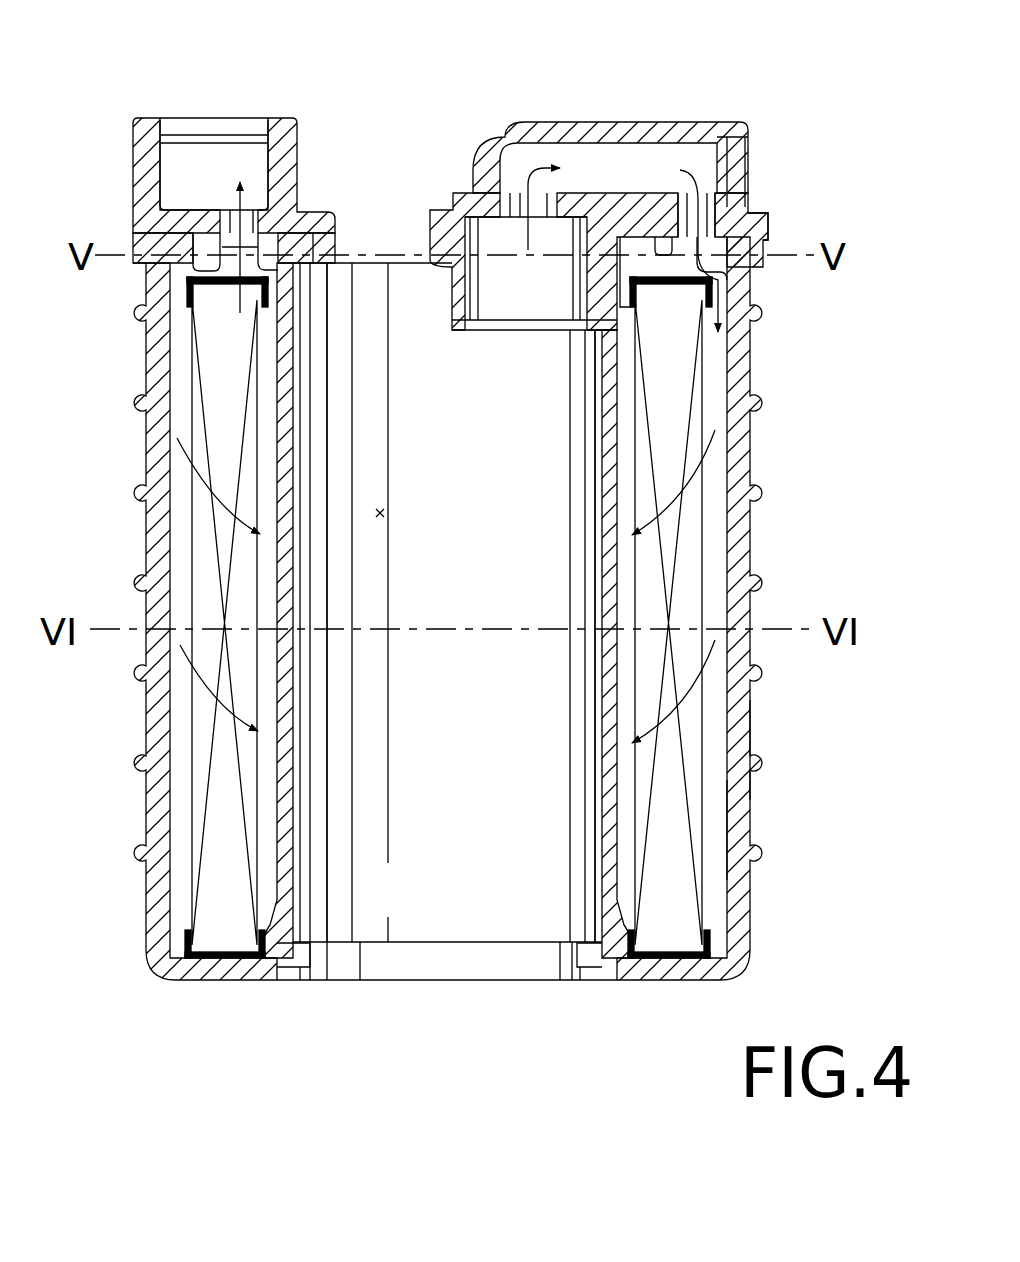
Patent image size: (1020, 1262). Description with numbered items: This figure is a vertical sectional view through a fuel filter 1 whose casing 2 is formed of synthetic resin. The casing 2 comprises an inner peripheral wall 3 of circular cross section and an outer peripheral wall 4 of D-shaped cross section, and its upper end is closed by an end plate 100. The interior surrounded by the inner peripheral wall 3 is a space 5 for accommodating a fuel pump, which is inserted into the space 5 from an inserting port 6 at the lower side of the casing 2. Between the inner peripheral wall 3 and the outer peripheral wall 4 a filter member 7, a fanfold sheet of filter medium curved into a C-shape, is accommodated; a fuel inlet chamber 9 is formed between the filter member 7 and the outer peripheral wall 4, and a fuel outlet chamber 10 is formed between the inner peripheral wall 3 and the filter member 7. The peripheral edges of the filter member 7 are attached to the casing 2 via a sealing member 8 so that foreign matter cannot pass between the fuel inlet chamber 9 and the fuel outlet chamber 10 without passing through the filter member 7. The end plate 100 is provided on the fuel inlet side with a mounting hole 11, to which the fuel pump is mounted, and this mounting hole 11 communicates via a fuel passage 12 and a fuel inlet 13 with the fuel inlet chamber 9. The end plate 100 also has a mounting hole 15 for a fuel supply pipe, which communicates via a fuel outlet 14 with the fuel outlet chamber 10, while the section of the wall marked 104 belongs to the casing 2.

The fuel filter 1 is at (698, 92).
The casing 2 is at (752, 372).
The inner peripheral wall 3 is at (605, 862).
The outer peripheral wall 4 is at (752, 748).
The space 5 is at (380, 510).
The inserting port 6 is at (313, 957).
The filter member 7 is at (690, 580).
The sealing member 8 is at (210, 263).
The fuel inlet chamber 9 is at (180, 560).
The fuel outlet chamber 10 is at (275, 498).
The mounting hole 11 is at (468, 287).
The fuel passage 12 is at (624, 182).
The fuel inlet 13 is at (718, 210).
The fuel outlet 14 is at (262, 218).
The mounting hole 15 is at (168, 172).
The end plate 100 is at (768, 227).
The housing wall section 104 is at (712, 835).